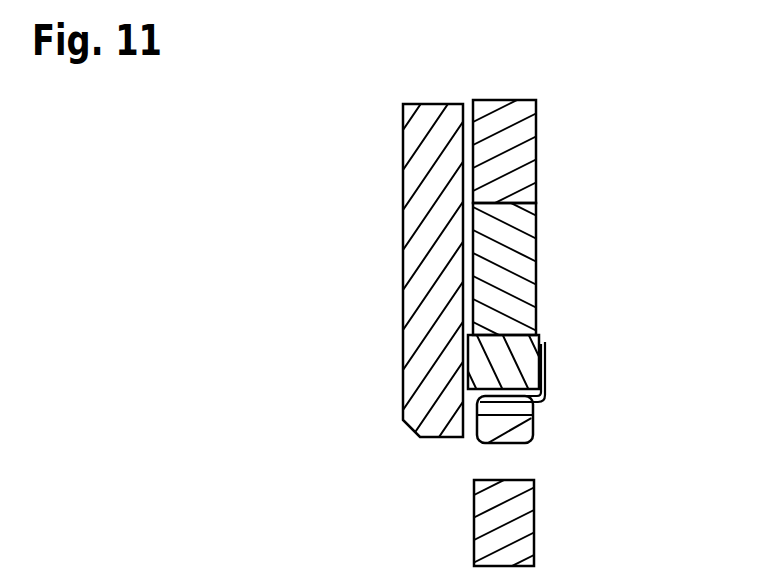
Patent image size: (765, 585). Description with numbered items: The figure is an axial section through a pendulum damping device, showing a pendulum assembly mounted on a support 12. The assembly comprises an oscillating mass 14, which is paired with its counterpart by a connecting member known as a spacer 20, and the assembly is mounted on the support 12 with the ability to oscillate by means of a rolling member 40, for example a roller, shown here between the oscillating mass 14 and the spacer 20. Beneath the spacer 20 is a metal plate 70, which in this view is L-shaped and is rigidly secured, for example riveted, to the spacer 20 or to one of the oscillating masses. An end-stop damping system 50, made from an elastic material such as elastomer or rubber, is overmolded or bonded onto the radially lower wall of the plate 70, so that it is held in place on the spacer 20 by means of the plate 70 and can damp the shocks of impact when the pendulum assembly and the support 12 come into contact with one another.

The oscillating mass 14 is at (430, 231).
The support 12 is at (512, 158).
The rolling member 40 is at (512, 263).
The spacer 20 is at (522, 353).
The metal plate 70 is at (546, 378).
The end-stop damping system 50 is at (530, 426).